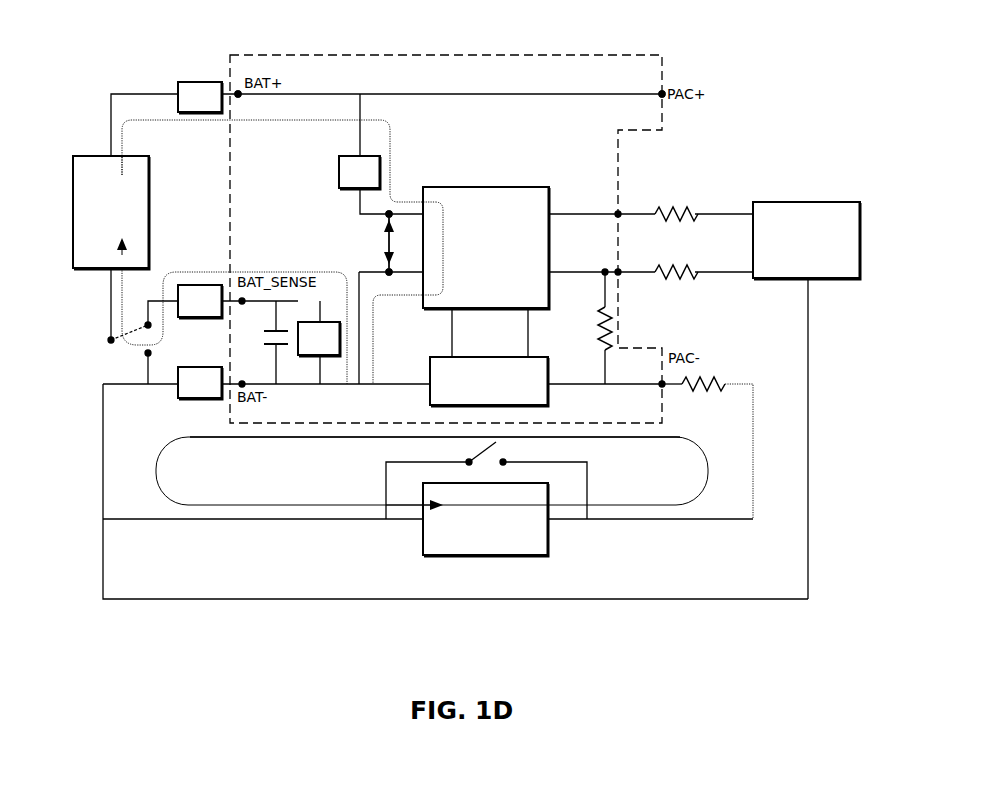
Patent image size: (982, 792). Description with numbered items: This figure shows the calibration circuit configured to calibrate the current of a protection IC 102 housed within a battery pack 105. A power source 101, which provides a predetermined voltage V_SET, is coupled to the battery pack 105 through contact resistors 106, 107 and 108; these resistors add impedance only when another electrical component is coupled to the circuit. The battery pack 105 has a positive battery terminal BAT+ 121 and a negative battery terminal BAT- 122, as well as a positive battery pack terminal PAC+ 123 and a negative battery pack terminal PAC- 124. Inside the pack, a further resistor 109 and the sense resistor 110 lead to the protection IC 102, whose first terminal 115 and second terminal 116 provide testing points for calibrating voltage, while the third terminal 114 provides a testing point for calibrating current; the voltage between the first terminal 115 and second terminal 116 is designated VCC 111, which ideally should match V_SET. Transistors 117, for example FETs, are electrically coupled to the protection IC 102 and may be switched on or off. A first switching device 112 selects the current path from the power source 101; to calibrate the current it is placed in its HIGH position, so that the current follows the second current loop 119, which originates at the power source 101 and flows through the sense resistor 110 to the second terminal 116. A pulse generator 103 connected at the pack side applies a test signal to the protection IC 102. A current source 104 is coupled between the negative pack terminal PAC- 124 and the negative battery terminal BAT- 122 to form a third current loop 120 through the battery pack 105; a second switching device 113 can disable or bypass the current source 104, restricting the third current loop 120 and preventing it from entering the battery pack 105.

The power source 101 is at (73, 205).
The protection IC 102 is at (498, 187).
The pulse generator 103 is at (862, 246).
The current source 104 is at (480, 556).
The battery pack 105 is at (433, 55).
The resistor R1 106 is at (200, 82).
The resistor R2 107 is at (202, 318).
The resistor R3 108 is at (204, 398).
The resistor R4 109 is at (339, 178).
The sense resistor RS 110 is at (322, 356).
The VCC 111 is at (387, 243).
The first switching device 112 is at (108, 360).
The second switching device 113 is at (520, 447).
The third terminal 114 is at (605, 270).
The first terminal 115 is at (389, 211).
The second terminal 116 is at (389, 275).
The transistors 117 is at (548, 396).
The second current loop 119 is at (378, 120).
The third current loop 120 is at (637, 506).
The positive battery terminal (BAT+) 121 is at (240, 98).
The negative battery terminal (BAT-) 122 is at (243, 382).
The positive battery pack terminal (PAC+) 123 is at (668, 78).
The negative battery pack terminal (PAC-) 124 is at (665, 388).